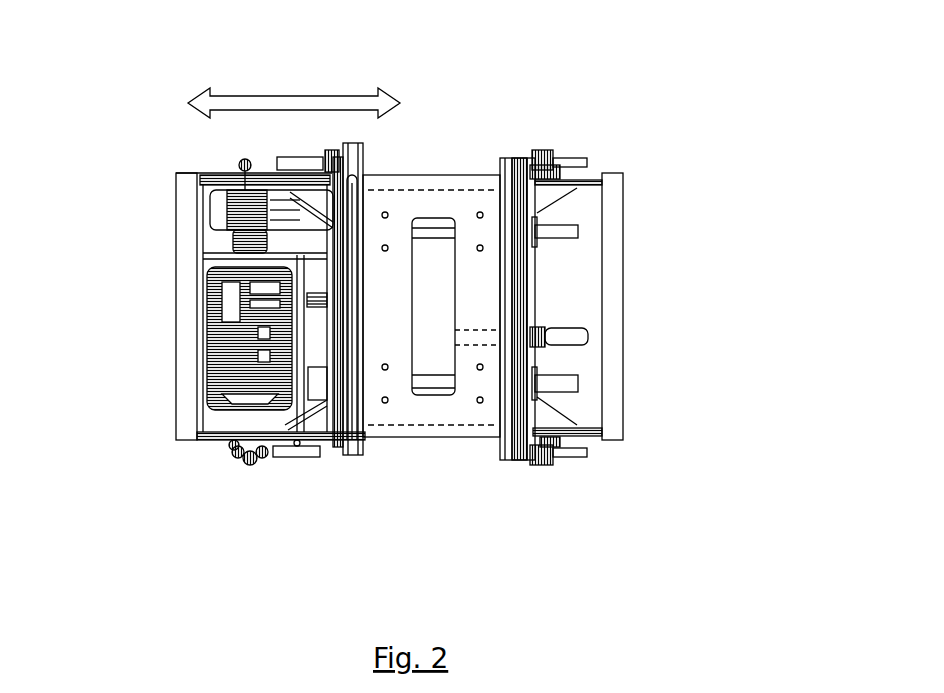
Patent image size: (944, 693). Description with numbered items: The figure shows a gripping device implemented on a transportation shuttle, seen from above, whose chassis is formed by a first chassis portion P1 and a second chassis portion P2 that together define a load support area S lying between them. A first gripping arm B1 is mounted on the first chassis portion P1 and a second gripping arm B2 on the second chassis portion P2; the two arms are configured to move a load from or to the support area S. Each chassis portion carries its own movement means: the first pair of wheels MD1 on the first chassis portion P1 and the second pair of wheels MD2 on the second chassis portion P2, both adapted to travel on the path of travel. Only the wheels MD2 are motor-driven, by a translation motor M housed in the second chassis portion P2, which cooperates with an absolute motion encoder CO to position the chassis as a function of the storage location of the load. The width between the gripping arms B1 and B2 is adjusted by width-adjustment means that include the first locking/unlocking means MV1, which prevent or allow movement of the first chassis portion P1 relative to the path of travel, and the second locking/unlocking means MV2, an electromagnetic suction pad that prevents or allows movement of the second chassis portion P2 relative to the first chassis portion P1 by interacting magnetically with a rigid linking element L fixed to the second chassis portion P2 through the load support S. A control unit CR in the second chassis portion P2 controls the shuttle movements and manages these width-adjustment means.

The second chassis portion P2 is at (176, 268).
The first chassis portion P1 is at (620, 262).
The translation motor M is at (212, 203).
The control unit CR is at (210, 355).
The absolute motion encoder CO is at (240, 458).
The second pair of wheels MD2 is at (277, 158).
The first pair of wheels MD1 is at (583, 158).
The second gripping arm B2 is at (352, 460).
The first gripping arm B1 is at (510, 458).
The load support area S is at (470, 202).
The linking element L is at (585, 333).
The second locking/unlocking means MV2 is at (542, 347).
The first locking/unlocking means MV1 is at (542, 150).